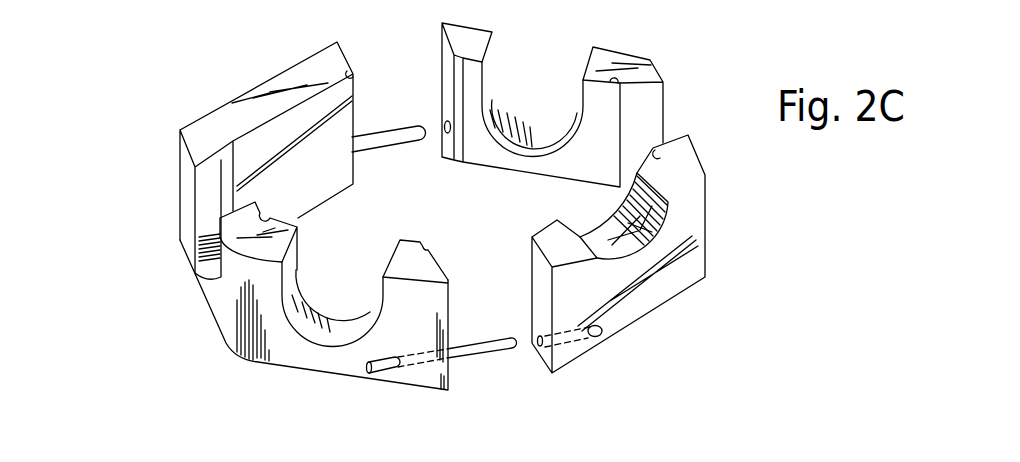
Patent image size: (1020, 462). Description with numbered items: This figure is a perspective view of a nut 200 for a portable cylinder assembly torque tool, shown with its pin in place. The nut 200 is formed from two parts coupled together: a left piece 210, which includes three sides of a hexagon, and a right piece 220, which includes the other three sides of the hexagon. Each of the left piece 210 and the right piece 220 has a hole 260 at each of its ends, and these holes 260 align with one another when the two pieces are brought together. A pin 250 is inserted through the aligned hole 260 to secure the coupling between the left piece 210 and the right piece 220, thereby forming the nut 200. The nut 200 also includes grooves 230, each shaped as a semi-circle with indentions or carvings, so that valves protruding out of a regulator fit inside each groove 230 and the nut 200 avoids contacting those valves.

The nut 200 is at (160, 298).
The left piece 210 is at (363, 377).
The right piece 220 is at (643, 320).
The groove 230 is at (208, 220).
The pin 250 is at (408, 145).
The hole 260 is at (446, 126).